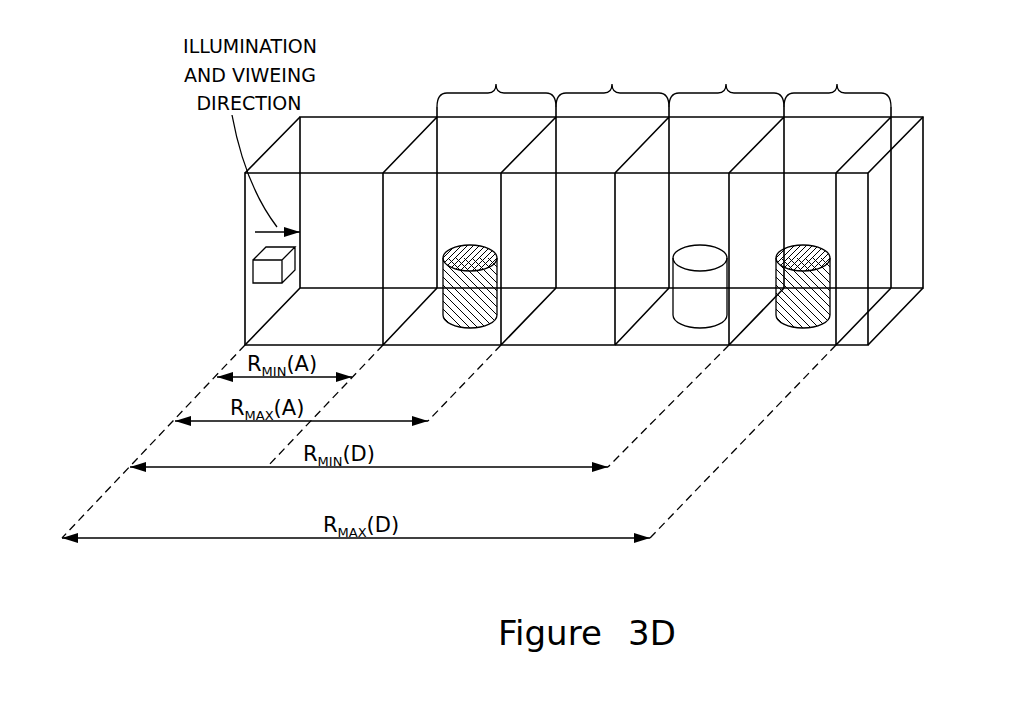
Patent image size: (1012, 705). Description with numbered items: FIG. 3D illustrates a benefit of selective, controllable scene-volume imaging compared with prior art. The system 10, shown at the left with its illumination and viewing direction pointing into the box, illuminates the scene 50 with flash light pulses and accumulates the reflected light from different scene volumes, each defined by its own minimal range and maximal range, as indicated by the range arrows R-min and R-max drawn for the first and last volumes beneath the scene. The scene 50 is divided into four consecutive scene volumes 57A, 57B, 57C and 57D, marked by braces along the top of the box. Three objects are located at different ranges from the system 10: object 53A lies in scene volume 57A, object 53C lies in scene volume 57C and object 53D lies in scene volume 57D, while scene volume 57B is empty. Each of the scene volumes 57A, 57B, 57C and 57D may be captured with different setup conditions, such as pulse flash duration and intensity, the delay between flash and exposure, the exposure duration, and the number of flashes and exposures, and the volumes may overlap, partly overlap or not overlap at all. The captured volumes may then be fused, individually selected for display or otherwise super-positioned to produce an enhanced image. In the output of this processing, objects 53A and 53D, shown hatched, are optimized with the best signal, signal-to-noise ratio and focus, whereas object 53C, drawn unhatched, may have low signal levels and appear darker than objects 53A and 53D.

The system 10 is at (270, 285).
The scene 50 is at (925, 202).
The object 53A is at (455, 327).
The object 53C is at (677, 308).
The object 53D is at (778, 310).
The scene volume 57A is at (496, 82).
The scene volume 57B is at (612, 82).
The scene volume 57C is at (726, 82).
The scene volume 57D is at (837, 82).